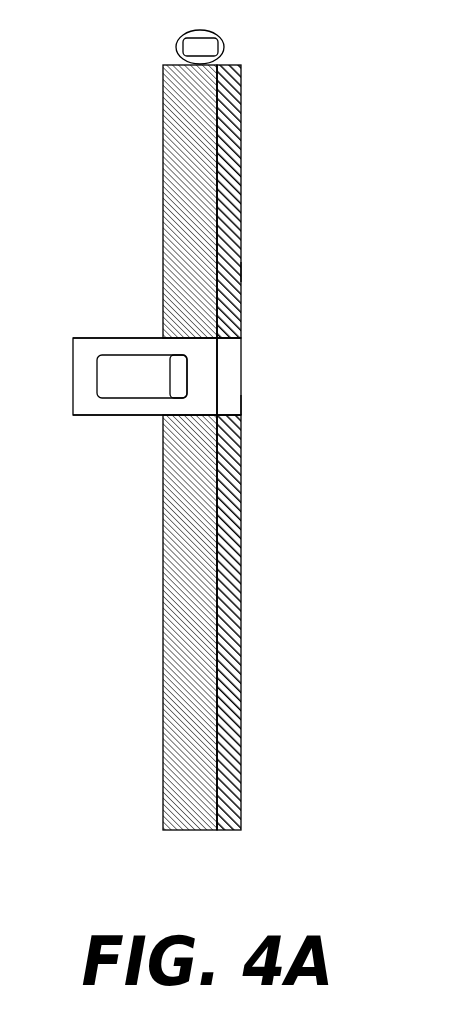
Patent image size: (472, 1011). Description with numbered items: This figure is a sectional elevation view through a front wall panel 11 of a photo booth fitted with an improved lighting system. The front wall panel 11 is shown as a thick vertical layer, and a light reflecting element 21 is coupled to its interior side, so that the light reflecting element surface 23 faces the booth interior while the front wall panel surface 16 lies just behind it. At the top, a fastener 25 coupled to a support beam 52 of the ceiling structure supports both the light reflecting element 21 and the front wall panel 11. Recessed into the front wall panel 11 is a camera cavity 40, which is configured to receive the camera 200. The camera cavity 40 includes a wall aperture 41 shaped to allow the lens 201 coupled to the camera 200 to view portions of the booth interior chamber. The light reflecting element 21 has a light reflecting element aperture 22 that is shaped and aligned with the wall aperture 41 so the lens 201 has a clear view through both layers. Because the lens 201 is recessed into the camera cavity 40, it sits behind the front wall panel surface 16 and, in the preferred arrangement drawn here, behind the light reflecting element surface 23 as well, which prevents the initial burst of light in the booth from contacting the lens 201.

The front wall panel 11 is at (168, 615).
The light reflecting element 21 is at (243, 615).
The light reflecting element surface 23 is at (250, 272).
The front wall panel surface 16 is at (228, 368).
The light reflecting element aperture 22 is at (231, 402).
The camera 200 is at (113, 371).
The camera cavity 40 is at (92, 408).
The wall aperture 41 is at (186, 405).
The lens 201 is at (177, 373).
The support beam 52 is at (178, 50).
The fastener 25 is at (223, 50).